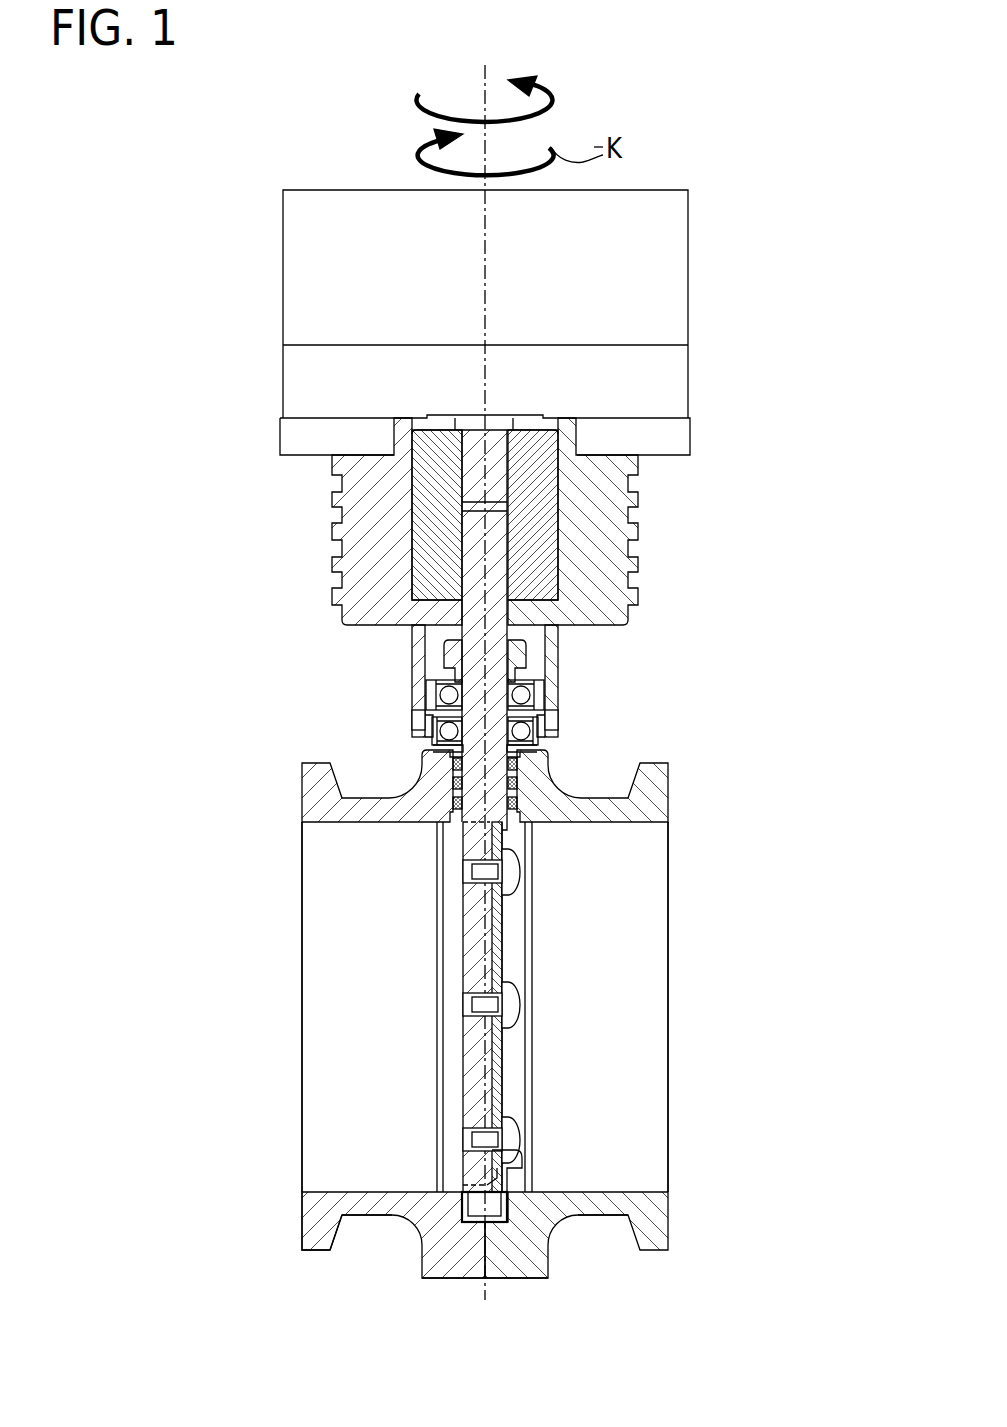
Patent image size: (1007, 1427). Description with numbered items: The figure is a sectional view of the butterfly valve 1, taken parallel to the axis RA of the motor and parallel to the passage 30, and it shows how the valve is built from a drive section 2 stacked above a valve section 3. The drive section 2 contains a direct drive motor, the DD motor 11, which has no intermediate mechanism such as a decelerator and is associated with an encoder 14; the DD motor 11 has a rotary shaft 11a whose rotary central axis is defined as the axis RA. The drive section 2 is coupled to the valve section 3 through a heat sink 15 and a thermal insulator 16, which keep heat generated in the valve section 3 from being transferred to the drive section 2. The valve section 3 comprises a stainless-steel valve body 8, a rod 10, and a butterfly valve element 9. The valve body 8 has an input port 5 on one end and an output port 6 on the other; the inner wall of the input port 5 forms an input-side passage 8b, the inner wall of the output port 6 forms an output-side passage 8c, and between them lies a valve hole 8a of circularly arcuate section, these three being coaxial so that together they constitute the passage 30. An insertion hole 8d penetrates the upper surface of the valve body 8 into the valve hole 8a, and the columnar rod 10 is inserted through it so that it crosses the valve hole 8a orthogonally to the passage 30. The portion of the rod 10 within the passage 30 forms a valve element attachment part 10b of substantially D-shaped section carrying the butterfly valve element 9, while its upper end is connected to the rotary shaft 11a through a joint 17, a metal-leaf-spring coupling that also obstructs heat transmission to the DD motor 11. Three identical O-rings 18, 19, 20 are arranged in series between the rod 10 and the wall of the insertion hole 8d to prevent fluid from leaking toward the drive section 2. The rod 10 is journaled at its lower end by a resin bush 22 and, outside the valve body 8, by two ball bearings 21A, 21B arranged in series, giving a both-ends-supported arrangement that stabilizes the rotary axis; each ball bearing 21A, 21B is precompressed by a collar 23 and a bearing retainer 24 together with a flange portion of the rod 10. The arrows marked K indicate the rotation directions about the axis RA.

The butterfly valve 1 is at (260, 119).
The drive section 2 is at (680, 176).
The valve section 3 is at (689, 801).
The input port 5 is at (650, 1222).
The output port 6 is at (320, 1205).
The valve body 8 is at (540, 783).
The valve hole 8a is at (507, 1180).
The input-side passage 8b is at (587, 1188).
The output-side passage 8c is at (360, 1188).
The insertion hole 8d is at (503, 838).
The butterfly valve element 9 is at (498, 952).
The rod 10 is at (473, 928).
The valve element attachment part 10b is at (492, 983).
The DD motor 11 is at (302, 245).
The rotary shaft 11a is at (497, 477).
The encoder 14 is at (312, 385).
The heat sink 15 is at (607, 548).
The thermal insulator 16 is at (555, 650).
The joint 17 is at (420, 550).
The O-ring 18 is at (450, 762).
The O-ring 19 is at (450, 785).
The O-ring 20 is at (455, 805).
The ball bearing 21A is at (557, 698).
The ball bearing 21B is at (548, 740).
The bush 22 is at (460, 1188).
The collar 23 is at (415, 650).
The bearing retainer 24 is at (413, 680).
The passage 30 is at (617, 1320).
The axis RA is at (485, 72).
The rotation direction K is at (553, 96).